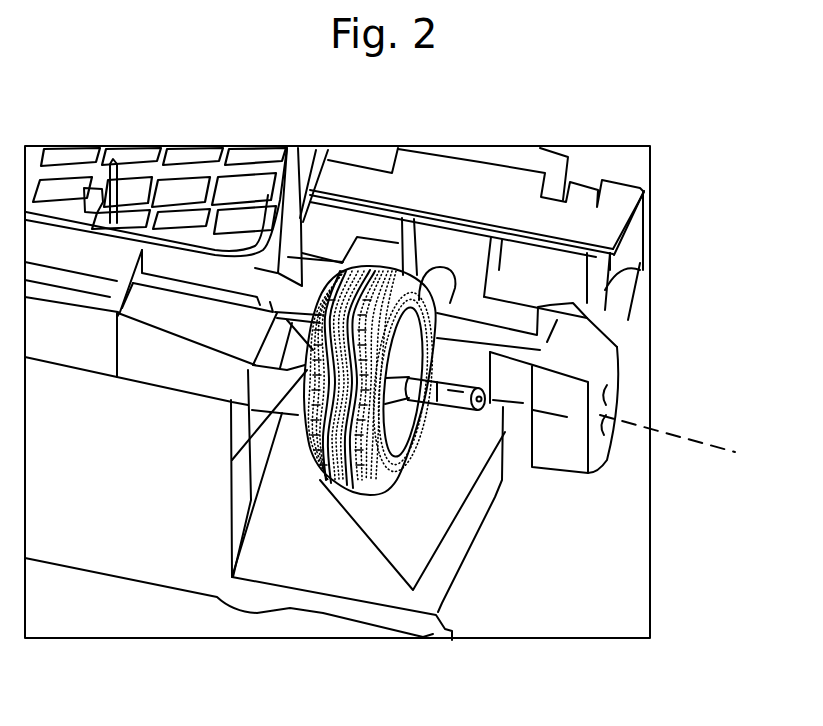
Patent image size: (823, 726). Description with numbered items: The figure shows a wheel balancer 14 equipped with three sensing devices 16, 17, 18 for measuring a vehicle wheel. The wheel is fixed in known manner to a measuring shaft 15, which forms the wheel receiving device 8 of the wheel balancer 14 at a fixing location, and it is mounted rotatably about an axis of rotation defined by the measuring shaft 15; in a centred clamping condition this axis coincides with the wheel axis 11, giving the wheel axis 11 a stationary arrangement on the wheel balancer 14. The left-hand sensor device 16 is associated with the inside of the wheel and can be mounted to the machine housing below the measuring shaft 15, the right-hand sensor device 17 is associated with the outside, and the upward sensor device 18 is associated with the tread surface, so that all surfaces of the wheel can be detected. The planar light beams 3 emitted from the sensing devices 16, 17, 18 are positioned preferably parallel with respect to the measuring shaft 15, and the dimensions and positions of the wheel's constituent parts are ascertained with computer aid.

The planar light beam 3 is at (440, 273).
The wheel receiving device 8 is at (434, 433).
The wheel axis 11 is at (713, 445).
The wheel balancer 14 is at (193, 520).
The measuring shaft 15 is at (462, 400).
The sensing device 16 is at (253, 430).
The sensing device 17 is at (567, 447).
The sensing device 18 is at (387, 273).